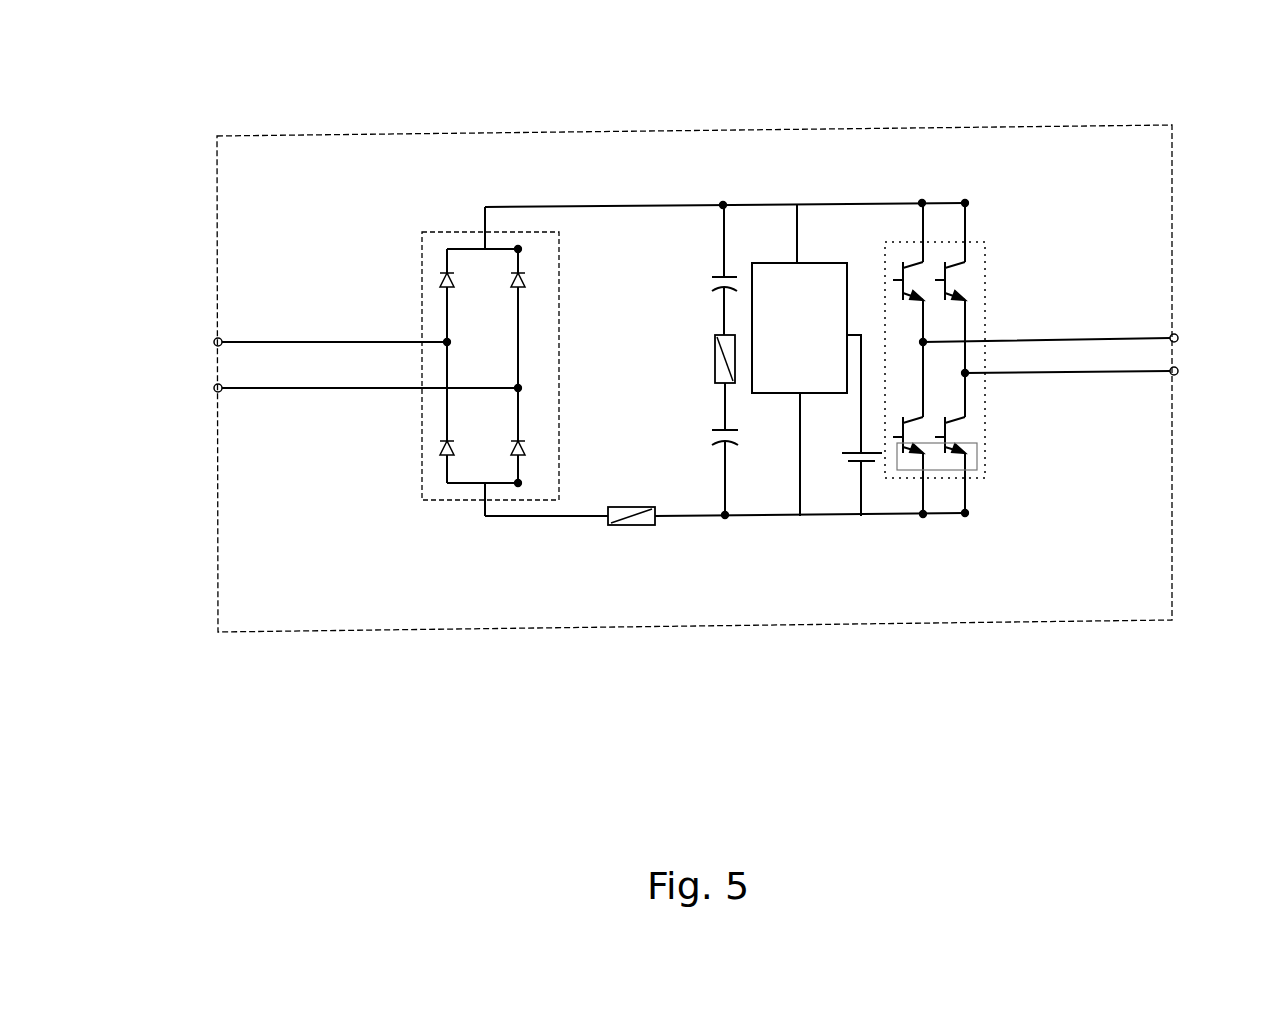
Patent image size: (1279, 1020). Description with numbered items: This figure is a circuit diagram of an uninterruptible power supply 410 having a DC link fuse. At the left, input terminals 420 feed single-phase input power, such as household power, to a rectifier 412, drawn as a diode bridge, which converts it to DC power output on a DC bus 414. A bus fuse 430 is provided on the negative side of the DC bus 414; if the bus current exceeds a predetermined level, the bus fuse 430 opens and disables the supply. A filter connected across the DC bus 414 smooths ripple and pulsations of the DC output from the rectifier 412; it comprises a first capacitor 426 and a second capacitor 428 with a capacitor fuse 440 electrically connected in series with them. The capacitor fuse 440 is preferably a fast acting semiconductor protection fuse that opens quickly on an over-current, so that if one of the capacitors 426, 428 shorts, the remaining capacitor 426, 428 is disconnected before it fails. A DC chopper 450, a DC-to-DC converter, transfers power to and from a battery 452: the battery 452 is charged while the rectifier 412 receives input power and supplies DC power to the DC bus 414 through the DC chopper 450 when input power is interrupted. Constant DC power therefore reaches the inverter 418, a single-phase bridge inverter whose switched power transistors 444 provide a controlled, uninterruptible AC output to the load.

The uninterruptible power supply 410 is at (1176, 217).
The rectifier 412 is at (464, 232).
The DC bus 414 is at (752, 207).
The inverter 418 is at (976, 240).
The input terminals 420 is at (156, 372).
The capacitor 426 is at (708, 270).
The capacitor 428 is at (700, 430).
The bus fuse 430 is at (617, 527).
The capacitor fuse 440 is at (657, 342).
The power transistors 444 is at (977, 470).
The DC chopper 450 is at (813, 278).
The battery 452 is at (850, 468).